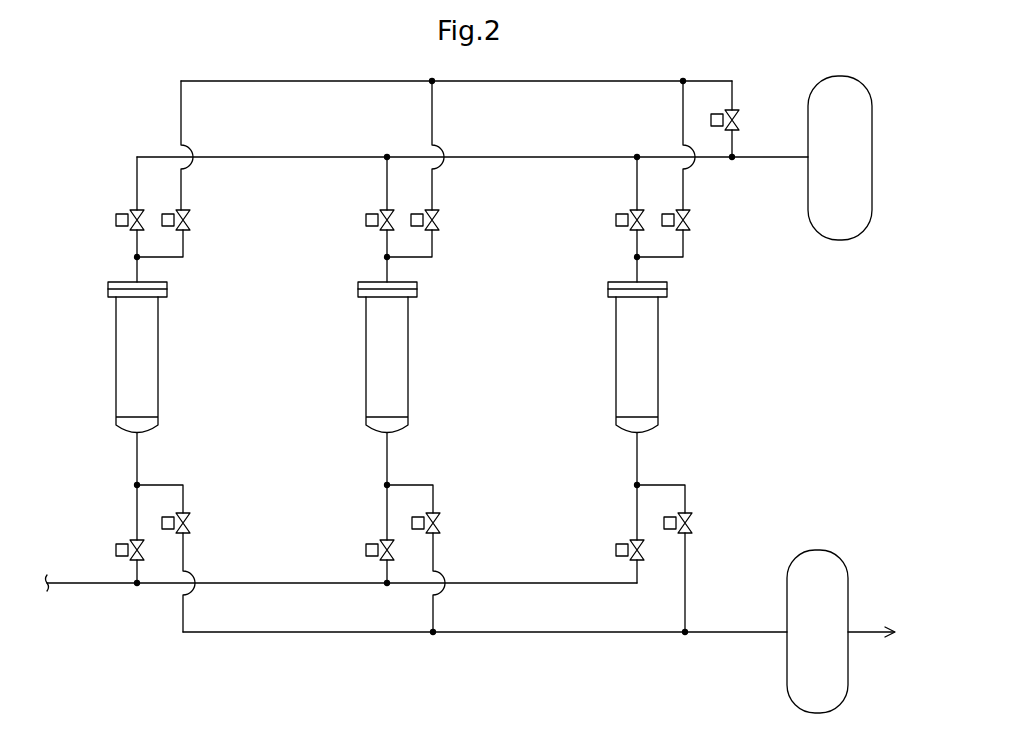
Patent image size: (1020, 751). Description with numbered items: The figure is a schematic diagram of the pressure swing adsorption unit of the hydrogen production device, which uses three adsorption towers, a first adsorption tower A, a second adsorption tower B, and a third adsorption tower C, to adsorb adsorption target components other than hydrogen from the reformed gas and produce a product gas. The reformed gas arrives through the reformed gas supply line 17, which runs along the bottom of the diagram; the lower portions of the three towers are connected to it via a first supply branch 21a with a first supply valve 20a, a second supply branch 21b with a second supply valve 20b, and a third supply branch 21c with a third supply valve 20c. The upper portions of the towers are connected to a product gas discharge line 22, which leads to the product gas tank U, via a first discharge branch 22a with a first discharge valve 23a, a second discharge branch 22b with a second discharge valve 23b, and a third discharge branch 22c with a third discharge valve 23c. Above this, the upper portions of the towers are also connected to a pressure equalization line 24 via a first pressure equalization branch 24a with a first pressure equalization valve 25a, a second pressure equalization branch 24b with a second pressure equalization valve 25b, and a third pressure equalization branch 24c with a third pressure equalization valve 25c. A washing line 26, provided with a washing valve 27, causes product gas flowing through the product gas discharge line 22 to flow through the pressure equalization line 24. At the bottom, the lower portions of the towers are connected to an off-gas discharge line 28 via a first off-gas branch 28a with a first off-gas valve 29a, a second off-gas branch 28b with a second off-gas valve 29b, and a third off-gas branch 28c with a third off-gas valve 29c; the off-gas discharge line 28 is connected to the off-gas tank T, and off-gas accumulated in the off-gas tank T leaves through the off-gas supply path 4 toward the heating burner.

The off-gas supply path 4 is at (867, 636).
The reformed gas supply line 17 is at (112, 585).
The first supply valve 20a is at (121, 537).
The second supply valve 20b is at (373, 537).
The third supply valve 20c is at (623, 537).
The first supply branch 21a is at (135, 453).
The second supply branch 21b is at (385, 453).
The third supply branch 21c is at (635, 453).
The product gas discharge line 22 is at (522, 157).
The first discharge branch 22a is at (133, 190).
The second discharge branch 22b is at (385, 192).
The third discharge branch 22c is at (635, 192).
The first discharge valve 23a is at (115, 223).
The second discharge valve 23b is at (365, 222).
The third discharge valve 23c is at (615, 222).
The pressure equalization line 24 is at (315, 85).
The first pressure equalization branch 24a is at (183, 243).
The second pressure equalization branch 24b is at (433, 243).
The third pressure equalization branch 24c is at (684, 243).
The first pressure equalization valve 25a is at (187, 223).
The second pressure equalization valve 25b is at (437, 223).
The third pressure equalization valve 25c is at (687, 223).
The washing line 26 is at (733, 88).
The washing valve 27 is at (710, 118).
The off-gas discharge line 28 is at (541, 633).
The first off-gas branch 28a is at (185, 498).
The second off-gas branch 28b is at (435, 498).
The third off-gas branch 28c is at (687, 498).
The first off-gas valve 29a is at (192, 522).
The second off-gas valve 29b is at (442, 522).
The third off-gas valve 29c is at (694, 522).
The first adsorption tower A is at (160, 367).
The second adsorption tower B is at (410, 367).
The third adsorption tower C is at (660, 367).
The product gas tank U is at (875, 157).
The off-gas tank T is at (845, 550).